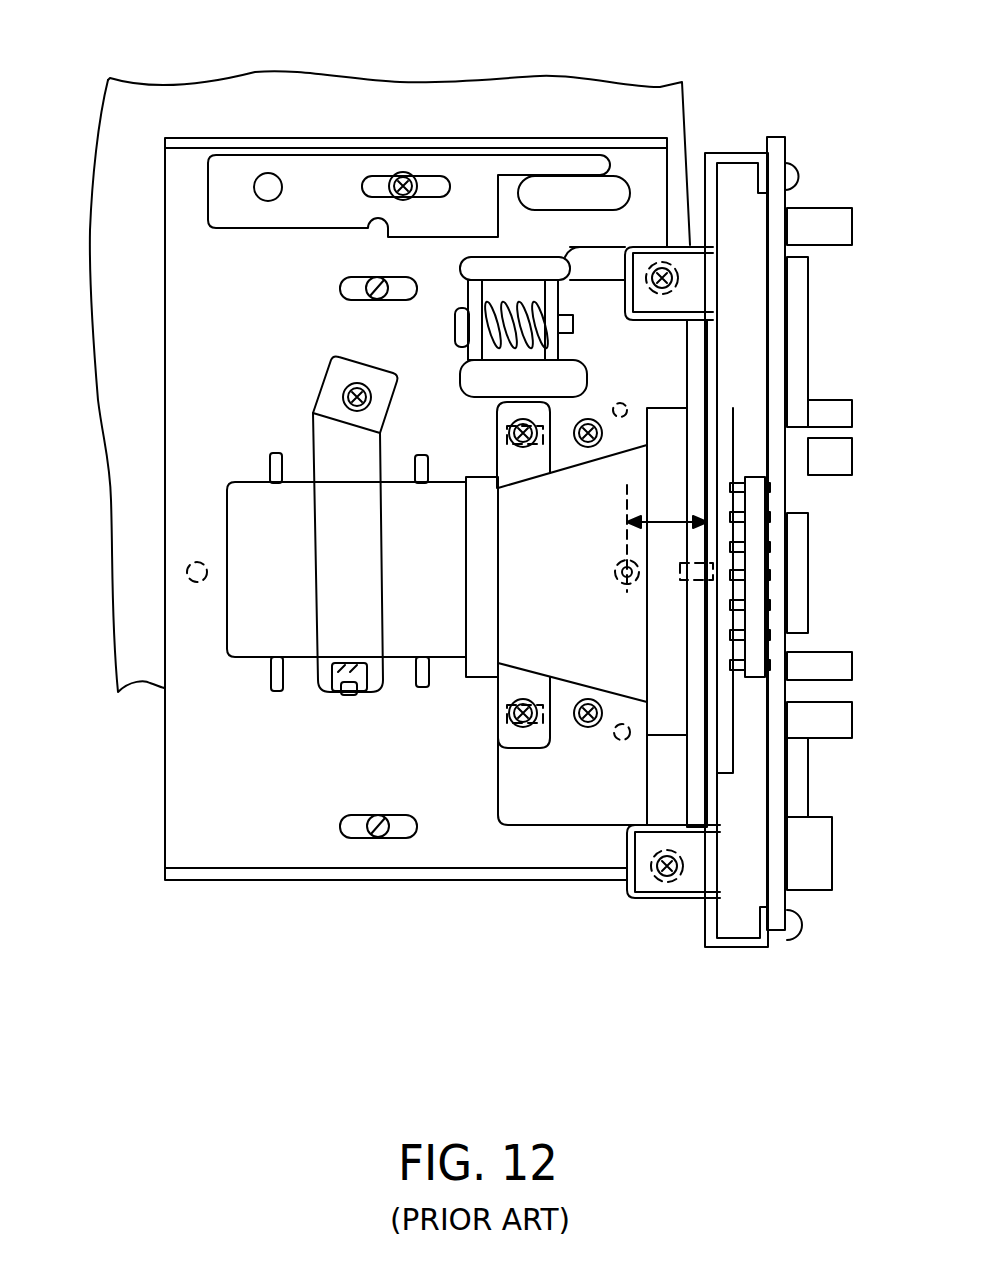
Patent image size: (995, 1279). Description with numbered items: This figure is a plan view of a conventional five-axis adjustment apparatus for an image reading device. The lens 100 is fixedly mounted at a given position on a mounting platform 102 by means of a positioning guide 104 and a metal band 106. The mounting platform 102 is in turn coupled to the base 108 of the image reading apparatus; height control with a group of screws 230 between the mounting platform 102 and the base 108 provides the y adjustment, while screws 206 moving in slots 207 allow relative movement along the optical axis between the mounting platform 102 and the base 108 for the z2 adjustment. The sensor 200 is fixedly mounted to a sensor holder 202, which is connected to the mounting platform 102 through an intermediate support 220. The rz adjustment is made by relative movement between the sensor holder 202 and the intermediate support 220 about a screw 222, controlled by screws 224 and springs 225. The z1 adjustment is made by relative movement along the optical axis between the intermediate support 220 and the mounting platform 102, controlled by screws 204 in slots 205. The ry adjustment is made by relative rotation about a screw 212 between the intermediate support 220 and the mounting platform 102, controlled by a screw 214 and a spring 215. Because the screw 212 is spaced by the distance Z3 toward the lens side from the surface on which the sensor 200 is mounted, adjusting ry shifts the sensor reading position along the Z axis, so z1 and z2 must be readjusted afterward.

The lens 100 is at (253, 650).
The mounting platform 102 is at (230, 840).
The positioning guide 104 is at (275, 694).
The metal band 106 is at (360, 562).
The base 108 is at (433, 107).
The sensor 200 is at (727, 748).
The sensor holder 202 is at (717, 330).
The screws 204 is at (508, 432).
The slots 205 is at (513, 446).
The screws 206 is at (380, 277).
The slots 207 is at (340, 288).
The screw 212 is at (613, 578).
The screw 214 is at (455, 327).
The spring 215 is at (510, 300).
The intermediate support 220 is at (687, 777).
The screw 222 is at (720, 583).
The screws 224 is at (680, 280).
The springs 225 is at (677, 247).
The screws 230 is at (622, 400).
The distance z3 Z3 is at (670, 516).